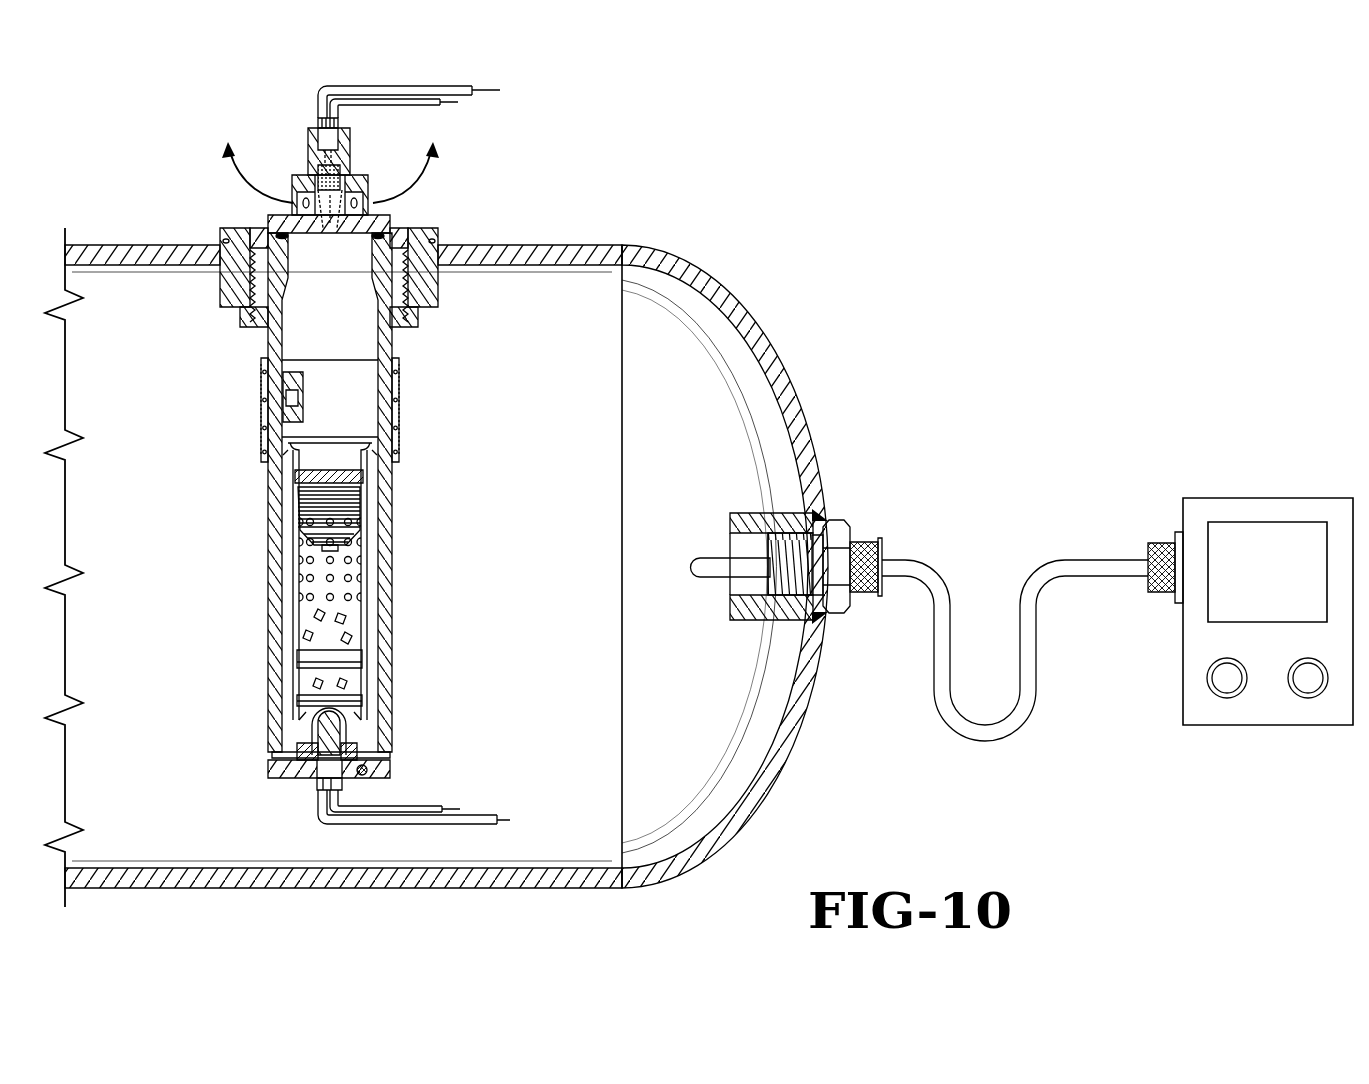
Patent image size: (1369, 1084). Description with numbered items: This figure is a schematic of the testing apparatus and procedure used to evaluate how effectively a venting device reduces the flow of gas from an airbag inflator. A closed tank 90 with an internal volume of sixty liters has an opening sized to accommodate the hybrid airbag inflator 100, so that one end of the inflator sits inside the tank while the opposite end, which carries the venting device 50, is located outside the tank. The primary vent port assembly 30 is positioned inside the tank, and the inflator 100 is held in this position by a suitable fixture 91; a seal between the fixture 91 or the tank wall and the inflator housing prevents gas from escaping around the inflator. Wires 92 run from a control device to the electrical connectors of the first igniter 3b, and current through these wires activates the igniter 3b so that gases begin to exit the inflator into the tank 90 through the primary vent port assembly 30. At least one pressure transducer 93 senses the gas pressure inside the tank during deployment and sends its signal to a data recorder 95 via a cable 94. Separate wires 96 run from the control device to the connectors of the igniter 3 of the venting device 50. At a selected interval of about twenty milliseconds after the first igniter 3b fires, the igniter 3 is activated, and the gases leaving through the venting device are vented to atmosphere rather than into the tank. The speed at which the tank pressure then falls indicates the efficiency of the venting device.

The igniter 3 is at (340, 168).
The first igniter 3b is at (320, 740).
The primary vent port assembly 30 is at (264, 405).
The venting device 50 is at (300, 161).
The closed tank 90 is at (737, 297).
The fixture 91 is at (410, 317).
The wires 92 is at (473, 822).
The pressure transducer 93 is at (868, 548).
The cable 94 is at (990, 727).
The data recorder 95 is at (1268, 512).
The wires 96 is at (440, 102).
The hybrid airbag inflator 100 is at (412, 418).